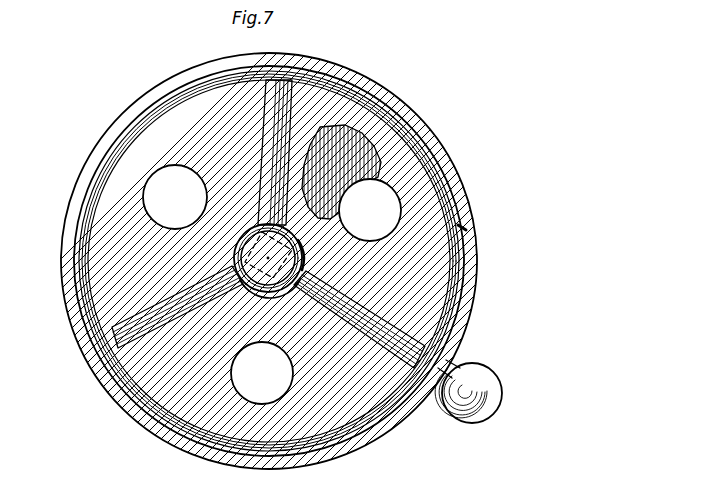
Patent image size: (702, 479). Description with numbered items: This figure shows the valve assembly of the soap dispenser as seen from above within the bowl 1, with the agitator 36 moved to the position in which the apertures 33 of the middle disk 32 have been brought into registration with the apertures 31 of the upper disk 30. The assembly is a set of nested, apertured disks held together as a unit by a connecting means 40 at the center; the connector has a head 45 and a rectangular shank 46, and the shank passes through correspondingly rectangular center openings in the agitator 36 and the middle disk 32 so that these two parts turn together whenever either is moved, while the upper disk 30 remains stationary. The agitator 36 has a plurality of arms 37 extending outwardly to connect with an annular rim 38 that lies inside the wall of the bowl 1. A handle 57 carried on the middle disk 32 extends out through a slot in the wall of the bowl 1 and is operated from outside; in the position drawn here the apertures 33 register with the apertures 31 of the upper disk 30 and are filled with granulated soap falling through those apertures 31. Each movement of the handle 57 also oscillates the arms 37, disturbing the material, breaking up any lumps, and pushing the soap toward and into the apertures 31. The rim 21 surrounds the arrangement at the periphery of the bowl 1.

The bowl 1 is at (70, 283).
The rim 21 is at (463, 228).
The upper disk 30 is at (351, 249).
The apertures 31 is at (282, 276).
The middle disk 32 is at (341, 131).
The apertures 33 is at (171, 178).
The agitator 36 is at (242, 234).
The arms 37 is at (263, 186).
The annular rim 38 is at (245, 80).
The connecting means 40 is at (300, 253).
The head 45 is at (270, 290).
The rectangular shank 46 is at (244, 249).
The handle 57 is at (489, 373).